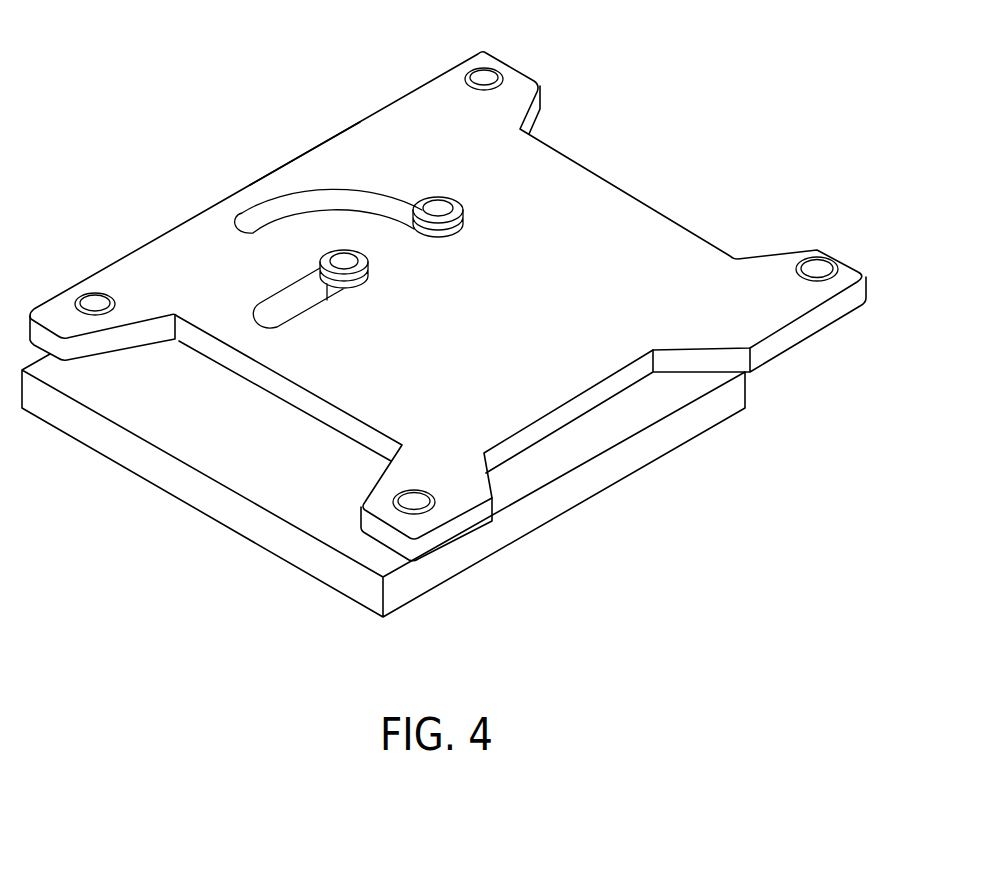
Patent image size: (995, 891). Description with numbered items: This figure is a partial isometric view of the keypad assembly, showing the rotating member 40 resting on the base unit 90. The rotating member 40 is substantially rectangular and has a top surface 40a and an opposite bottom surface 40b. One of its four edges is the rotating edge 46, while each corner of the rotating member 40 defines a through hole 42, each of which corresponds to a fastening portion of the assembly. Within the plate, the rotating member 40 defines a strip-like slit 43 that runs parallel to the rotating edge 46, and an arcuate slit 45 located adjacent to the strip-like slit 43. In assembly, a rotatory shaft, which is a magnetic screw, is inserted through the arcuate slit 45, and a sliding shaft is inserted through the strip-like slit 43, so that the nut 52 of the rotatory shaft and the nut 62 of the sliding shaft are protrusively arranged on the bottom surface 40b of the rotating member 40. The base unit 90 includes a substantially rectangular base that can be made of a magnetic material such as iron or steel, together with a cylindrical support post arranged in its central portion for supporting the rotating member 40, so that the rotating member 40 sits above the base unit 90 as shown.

The rotating member 40 is at (453, 291).
The top surface 40a is at (808, 337).
The bottom surface 40b is at (618, 227).
The through hole 42 is at (490, 80).
The strip-like slit 43 is at (268, 313).
The arcuate slit 45 is at (355, 200).
The rotating edge 46 is at (307, 147).
The nut 52 is at (437, 207).
The nut 62 is at (338, 260).
The base unit 90 is at (193, 487).